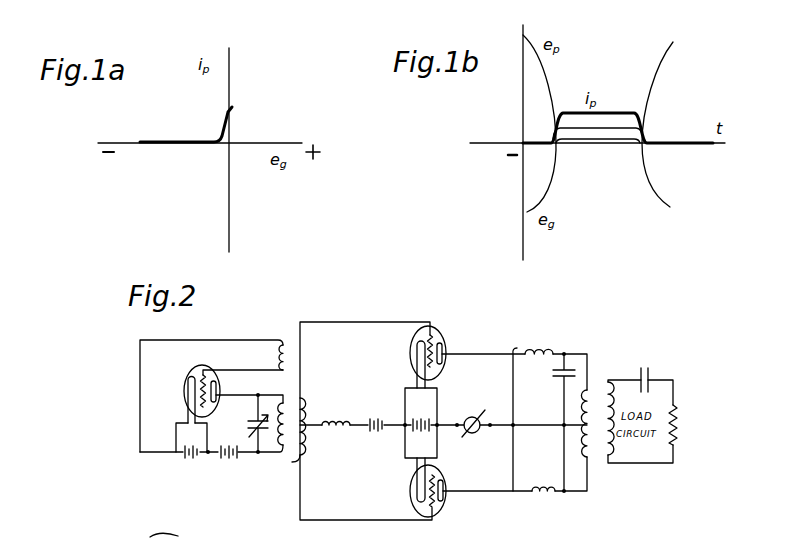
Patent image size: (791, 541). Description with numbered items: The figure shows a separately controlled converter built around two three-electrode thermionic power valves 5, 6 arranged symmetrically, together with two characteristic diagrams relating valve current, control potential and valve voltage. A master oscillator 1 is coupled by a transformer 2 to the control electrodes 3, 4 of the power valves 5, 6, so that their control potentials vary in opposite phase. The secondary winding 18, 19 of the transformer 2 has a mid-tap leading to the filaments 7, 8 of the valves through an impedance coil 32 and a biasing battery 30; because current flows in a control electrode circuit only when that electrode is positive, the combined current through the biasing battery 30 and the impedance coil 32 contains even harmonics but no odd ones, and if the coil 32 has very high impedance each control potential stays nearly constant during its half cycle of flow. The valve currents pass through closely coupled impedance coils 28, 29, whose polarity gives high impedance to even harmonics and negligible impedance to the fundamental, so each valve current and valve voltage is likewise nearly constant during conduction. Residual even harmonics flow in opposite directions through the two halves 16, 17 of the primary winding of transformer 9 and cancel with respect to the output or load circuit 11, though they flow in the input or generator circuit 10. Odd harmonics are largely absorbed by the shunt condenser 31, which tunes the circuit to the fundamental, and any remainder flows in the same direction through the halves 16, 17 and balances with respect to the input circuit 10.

The master oscillator 1 is at (184, 376).
The transformer 2 is at (281, 452).
The control electrode 3 is at (433, 338).
The control electrode 4 is at (434, 508).
The power valve 5 is at (449, 345).
The power valve 6 is at (448, 501).
The filament 7 is at (410, 353).
The filament 8 is at (412, 490).
The transformer 9 is at (604, 422).
The input or generator circuit 10 is at (468, 413).
The output or load circuit 11 is at (676, 395).
The primary winding half 16 is at (601, 381).
The primary winding half 17 is at (592, 458).
The secondary winding 18 is at (307, 406).
The secondary winding 19 is at (305, 456).
The impedance coil 28 is at (545, 352).
The impedance coil 29 is at (545, 497).
The biasing battery 30 is at (376, 438).
The shunt condenser 31 is at (555, 375).
The impedance coil 32 is at (342, 432).